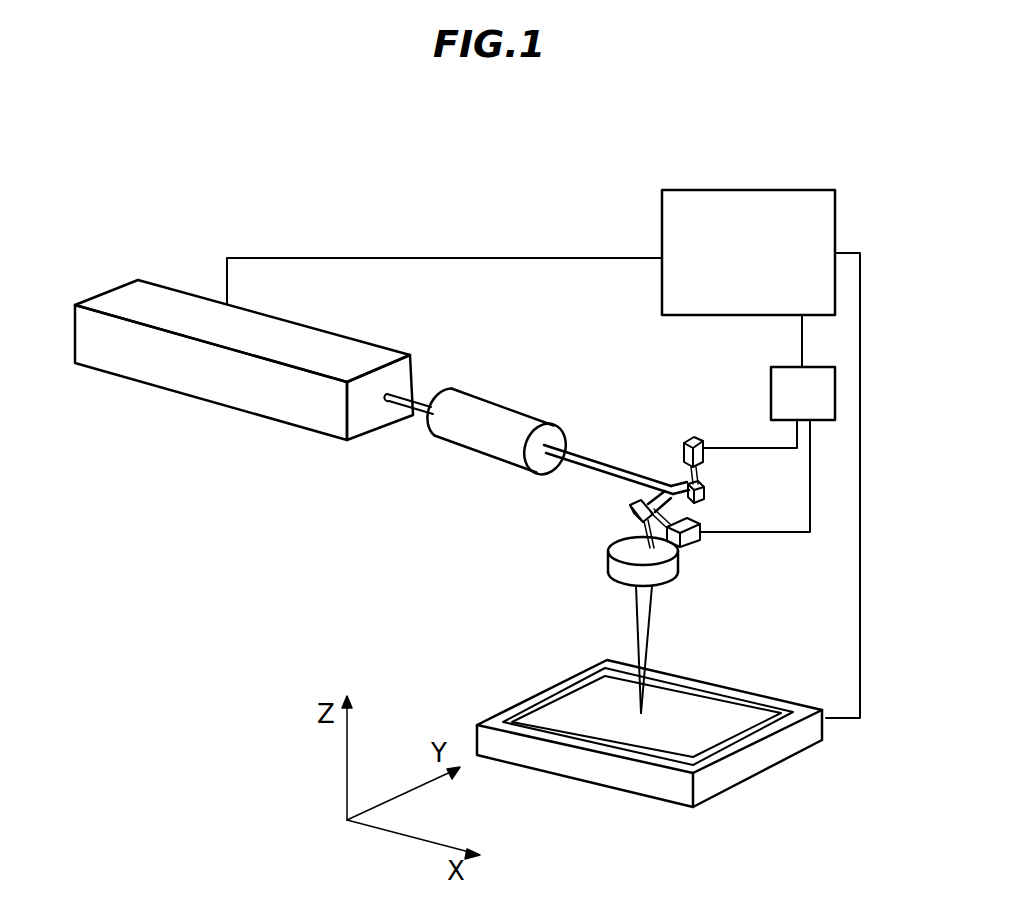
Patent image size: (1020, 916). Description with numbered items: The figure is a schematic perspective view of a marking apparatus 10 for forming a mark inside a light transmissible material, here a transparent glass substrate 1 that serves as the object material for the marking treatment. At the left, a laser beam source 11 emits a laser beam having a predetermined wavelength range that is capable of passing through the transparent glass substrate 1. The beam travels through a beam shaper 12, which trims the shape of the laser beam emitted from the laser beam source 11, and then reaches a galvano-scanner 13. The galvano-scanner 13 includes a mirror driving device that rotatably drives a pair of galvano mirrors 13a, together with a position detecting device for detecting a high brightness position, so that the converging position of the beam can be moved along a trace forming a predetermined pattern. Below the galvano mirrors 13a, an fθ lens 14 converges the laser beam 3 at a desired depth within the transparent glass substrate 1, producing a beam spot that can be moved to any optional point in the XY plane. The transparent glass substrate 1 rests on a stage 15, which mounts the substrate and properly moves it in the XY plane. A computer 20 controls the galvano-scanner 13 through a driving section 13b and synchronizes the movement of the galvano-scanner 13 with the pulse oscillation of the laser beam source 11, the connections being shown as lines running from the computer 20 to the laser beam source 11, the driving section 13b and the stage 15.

The transparent glass substrate 1 is at (642, 760).
The laser beam 3 is at (653, 623).
The marking apparatus 10 is at (566, 193).
The laser beam source 11 is at (193, 398).
The beam shaper 12 is at (468, 455).
The galvano-scanner 13 is at (668, 462).
The galvano mirrors 13a is at (632, 508).
The driving section 13b is at (771, 390).
The fθ lens 14 is at (680, 567).
The stage 15 is at (765, 773).
The computer 20 is at (753, 190).